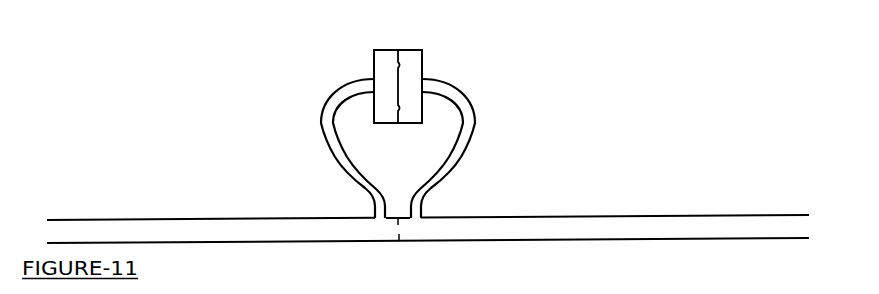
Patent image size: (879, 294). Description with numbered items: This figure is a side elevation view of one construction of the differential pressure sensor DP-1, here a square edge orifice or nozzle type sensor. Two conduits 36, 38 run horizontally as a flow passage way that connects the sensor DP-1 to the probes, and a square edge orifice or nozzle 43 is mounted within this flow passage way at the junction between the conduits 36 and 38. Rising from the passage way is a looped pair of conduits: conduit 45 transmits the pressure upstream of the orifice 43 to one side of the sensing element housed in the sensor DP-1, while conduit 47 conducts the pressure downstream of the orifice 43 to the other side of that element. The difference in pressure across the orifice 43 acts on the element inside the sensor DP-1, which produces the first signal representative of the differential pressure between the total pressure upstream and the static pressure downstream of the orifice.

The conduit 36 is at (70, 220).
The conduit 38 is at (605, 216).
The square edge orifice or nozzle 43 is at (399, 241).
The conduit 45 is at (325, 109).
The conduit 47 is at (472, 107).
The sensor DP-1 is at (421, 50).